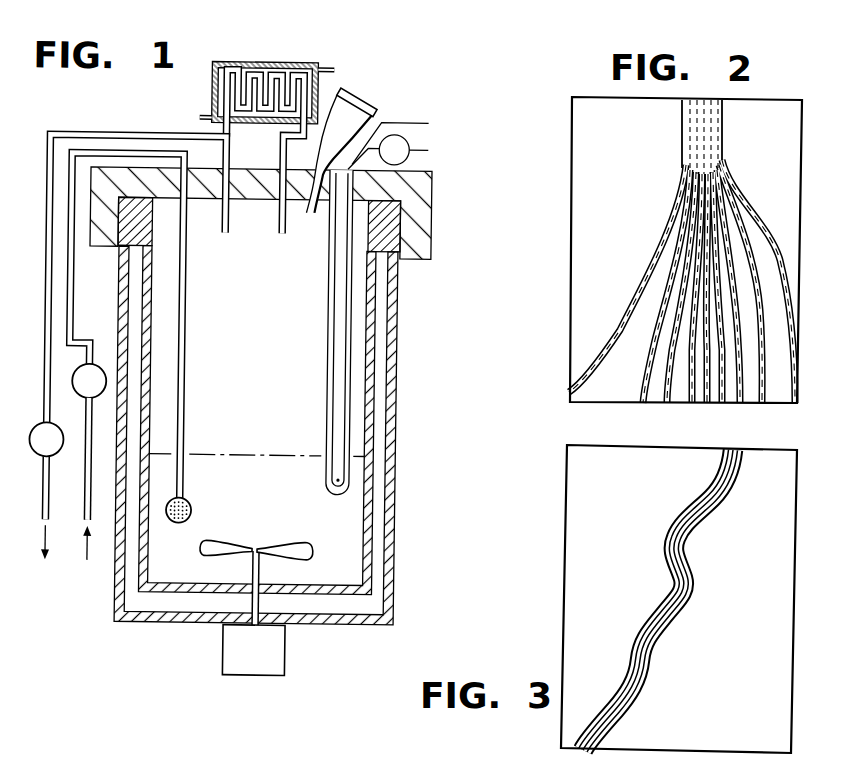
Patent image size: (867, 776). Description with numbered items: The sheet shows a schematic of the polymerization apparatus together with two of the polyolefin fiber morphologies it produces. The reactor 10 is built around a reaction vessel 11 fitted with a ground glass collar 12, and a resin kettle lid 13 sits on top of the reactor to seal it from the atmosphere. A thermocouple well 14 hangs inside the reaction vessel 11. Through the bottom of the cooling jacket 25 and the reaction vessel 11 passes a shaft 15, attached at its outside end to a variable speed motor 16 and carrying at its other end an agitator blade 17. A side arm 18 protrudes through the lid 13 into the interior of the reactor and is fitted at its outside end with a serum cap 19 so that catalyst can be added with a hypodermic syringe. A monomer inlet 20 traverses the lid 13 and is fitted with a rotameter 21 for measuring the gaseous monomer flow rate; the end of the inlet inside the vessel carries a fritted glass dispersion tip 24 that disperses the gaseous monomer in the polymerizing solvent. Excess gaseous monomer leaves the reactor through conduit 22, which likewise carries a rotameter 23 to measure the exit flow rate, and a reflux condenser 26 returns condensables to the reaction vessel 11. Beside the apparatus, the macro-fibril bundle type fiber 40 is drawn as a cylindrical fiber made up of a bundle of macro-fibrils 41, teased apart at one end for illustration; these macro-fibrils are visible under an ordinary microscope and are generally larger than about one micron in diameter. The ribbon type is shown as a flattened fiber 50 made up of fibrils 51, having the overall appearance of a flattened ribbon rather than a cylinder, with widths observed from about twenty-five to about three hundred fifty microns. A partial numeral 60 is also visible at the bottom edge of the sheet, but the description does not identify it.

In FIG. 1, the reactor 10 is at (305, 435).
In FIG. 1, the reaction vessel 11 is at (370, 390).
In FIG. 1, the ground glass collar 12 is at (388, 230).
In FIG. 1, the resin kettle lid 13 is at (414, 176).
In FIG. 1, the thermocouple well 14 is at (349, 292).
In FIG. 1, the shaft 15 is at (263, 600).
In FIG. 1, the variable speed motor 16 is at (240, 658).
In FIG. 1, the agitator blade 17 is at (229, 555).
In FIG. 1, the side arm 18 is at (343, 116).
In FIG. 1, the serum cap 19 is at (345, 90).
In FIG. 1, the monomer inlet 20 is at (84, 525).
In FIG. 1, the rotameter 21 is at (97, 369).
In FIG. 1, the conduit 22 is at (124, 134).
In FIG. 1, the rotameter 23 is at (49, 456).
In FIG. 1, the fritted glass dispersion tip 24 is at (168, 519).
In FIG. 1, the cooling jacket 25 is at (393, 435).
In FIG. 1, the reflux condenser 26 is at (248, 73).
In FIG. 2, the fiber 40 is at (703, 132).
In FIG. 2, the macro-fibrils 41 is at (738, 333).
In FIG. 3, the flattened fiber 50 is at (679, 600).
In FIG. 3, the fibrils 51 is at (633, 648).
In FIG. 1, the partial numeral 60 is at (167, 770).